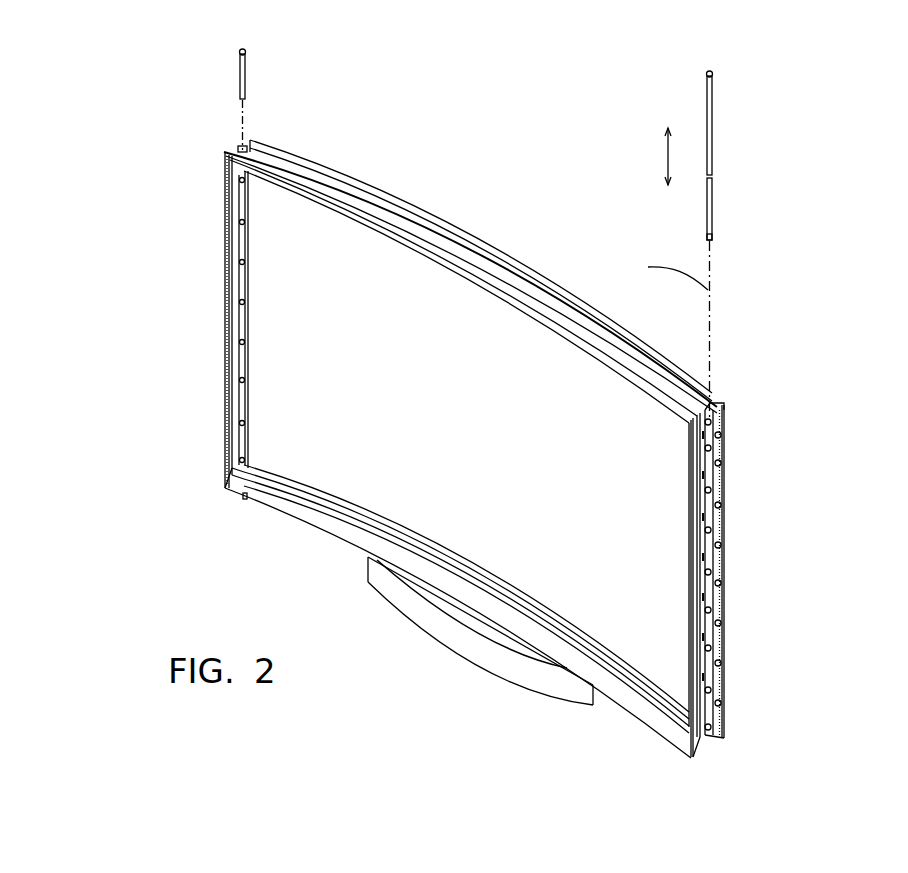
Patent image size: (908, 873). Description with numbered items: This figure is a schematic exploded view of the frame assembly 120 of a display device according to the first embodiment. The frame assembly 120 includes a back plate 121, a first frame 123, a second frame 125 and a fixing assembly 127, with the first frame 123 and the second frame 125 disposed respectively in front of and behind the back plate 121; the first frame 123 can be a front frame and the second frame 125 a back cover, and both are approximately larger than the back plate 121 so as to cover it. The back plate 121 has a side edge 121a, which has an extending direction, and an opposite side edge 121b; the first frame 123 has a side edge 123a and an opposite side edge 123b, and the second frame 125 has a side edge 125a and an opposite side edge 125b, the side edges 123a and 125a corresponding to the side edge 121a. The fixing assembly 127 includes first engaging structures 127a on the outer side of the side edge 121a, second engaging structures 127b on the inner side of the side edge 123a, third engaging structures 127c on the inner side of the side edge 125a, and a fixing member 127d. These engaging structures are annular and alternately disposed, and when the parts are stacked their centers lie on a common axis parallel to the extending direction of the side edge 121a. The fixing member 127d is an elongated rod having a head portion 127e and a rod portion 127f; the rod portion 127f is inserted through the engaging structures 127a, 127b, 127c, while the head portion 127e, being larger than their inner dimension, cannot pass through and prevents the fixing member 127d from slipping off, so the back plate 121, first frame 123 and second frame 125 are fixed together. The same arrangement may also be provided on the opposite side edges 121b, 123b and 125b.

The frame assembly 120 is at (89, 121).
The back plate 121 is at (697, 748).
The side edge 121a is at (711, 625).
The side edge 121b is at (242, 352).
The first frame 123 is at (647, 710).
The side edge 123a is at (692, 740).
The side edge 123b is at (228, 438).
The second frame 125 is at (716, 684).
The side edge 125a is at (723, 665).
The side edge 125b is at (249, 142).
The fixing assembly 127 is at (836, 198).
The first engaging structure 127a is at (240, 262).
The second engaging structure 127b is at (697, 552).
The third engaging structure 127c is at (722, 505).
The fixing member 127d is at (241, 82).
The head portion 127e is at (713, 76).
The rod portion 127f is at (713, 237).